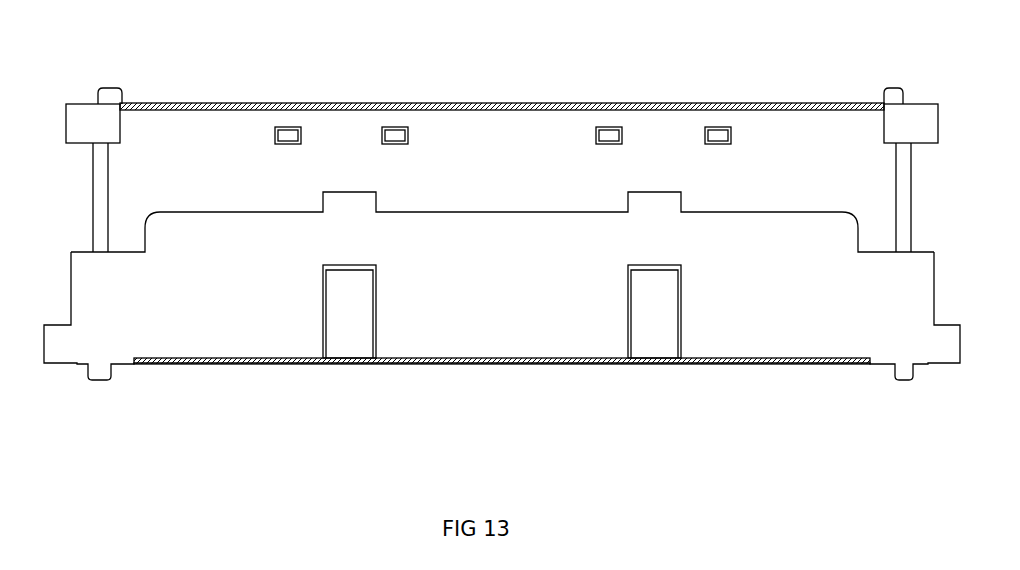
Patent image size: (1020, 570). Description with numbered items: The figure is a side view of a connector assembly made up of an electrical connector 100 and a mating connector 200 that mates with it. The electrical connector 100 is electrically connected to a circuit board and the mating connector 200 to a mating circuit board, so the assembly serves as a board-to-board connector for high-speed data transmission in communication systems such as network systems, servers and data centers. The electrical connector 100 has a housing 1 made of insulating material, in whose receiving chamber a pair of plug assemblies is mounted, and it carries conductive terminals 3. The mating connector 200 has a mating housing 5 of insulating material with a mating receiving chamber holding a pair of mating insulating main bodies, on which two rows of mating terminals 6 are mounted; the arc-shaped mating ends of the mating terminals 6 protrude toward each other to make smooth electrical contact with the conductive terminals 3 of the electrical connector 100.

The housing 1 is at (502, 250).
The electrical connector 100 is at (735, 302).
The mating connector 200 is at (352, 170).
The conductive terminals 3 is at (297, 362).
The mating housing 5 is at (785, 160).
The mating terminals 6 is at (548, 103).